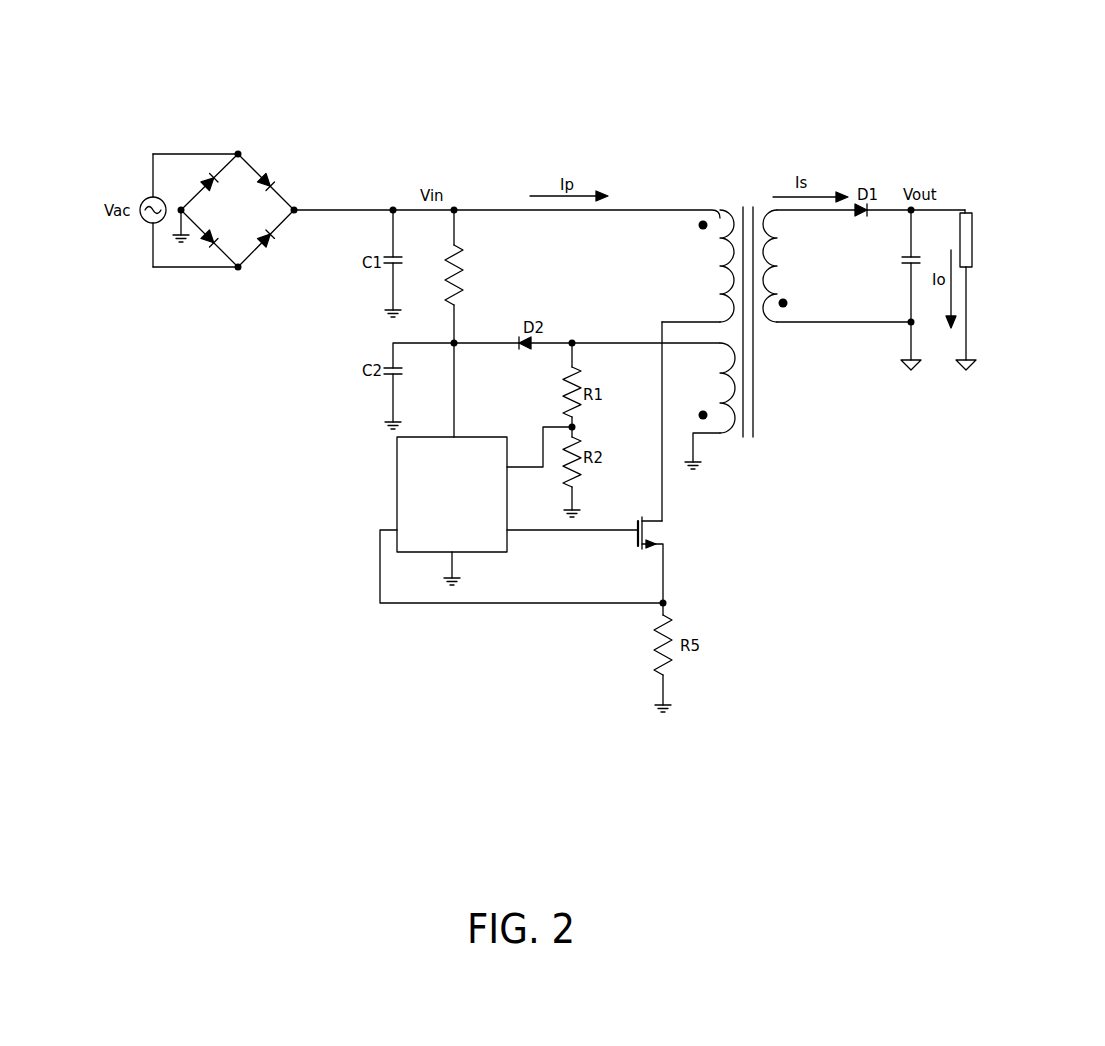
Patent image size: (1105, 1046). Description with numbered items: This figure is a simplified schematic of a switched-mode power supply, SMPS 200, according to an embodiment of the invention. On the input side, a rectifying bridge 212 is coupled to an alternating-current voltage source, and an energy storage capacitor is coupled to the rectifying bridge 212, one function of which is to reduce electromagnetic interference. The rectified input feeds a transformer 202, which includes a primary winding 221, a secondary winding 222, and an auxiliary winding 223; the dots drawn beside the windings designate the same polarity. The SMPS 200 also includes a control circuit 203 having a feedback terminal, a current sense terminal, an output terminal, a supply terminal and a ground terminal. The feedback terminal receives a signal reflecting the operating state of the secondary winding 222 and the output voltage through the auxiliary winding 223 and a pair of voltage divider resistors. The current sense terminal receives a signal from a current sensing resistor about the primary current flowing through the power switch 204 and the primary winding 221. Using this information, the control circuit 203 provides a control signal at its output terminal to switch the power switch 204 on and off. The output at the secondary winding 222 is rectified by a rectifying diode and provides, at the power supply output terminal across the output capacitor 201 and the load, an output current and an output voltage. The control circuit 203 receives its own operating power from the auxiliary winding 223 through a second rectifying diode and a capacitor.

The SMPS 200 is at (982, 243).
The rectifying bridge 212 is at (287, 178).
The transformer 202 is at (738, 205).
The primary winding 221 is at (707, 272).
The secondary winding 222 is at (785, 265).
The auxiliary winding 223 is at (700, 395).
The output capacitor 201 is at (898, 258).
The control circuit 203 is at (478, 437).
The power switch 204 is at (670, 515).